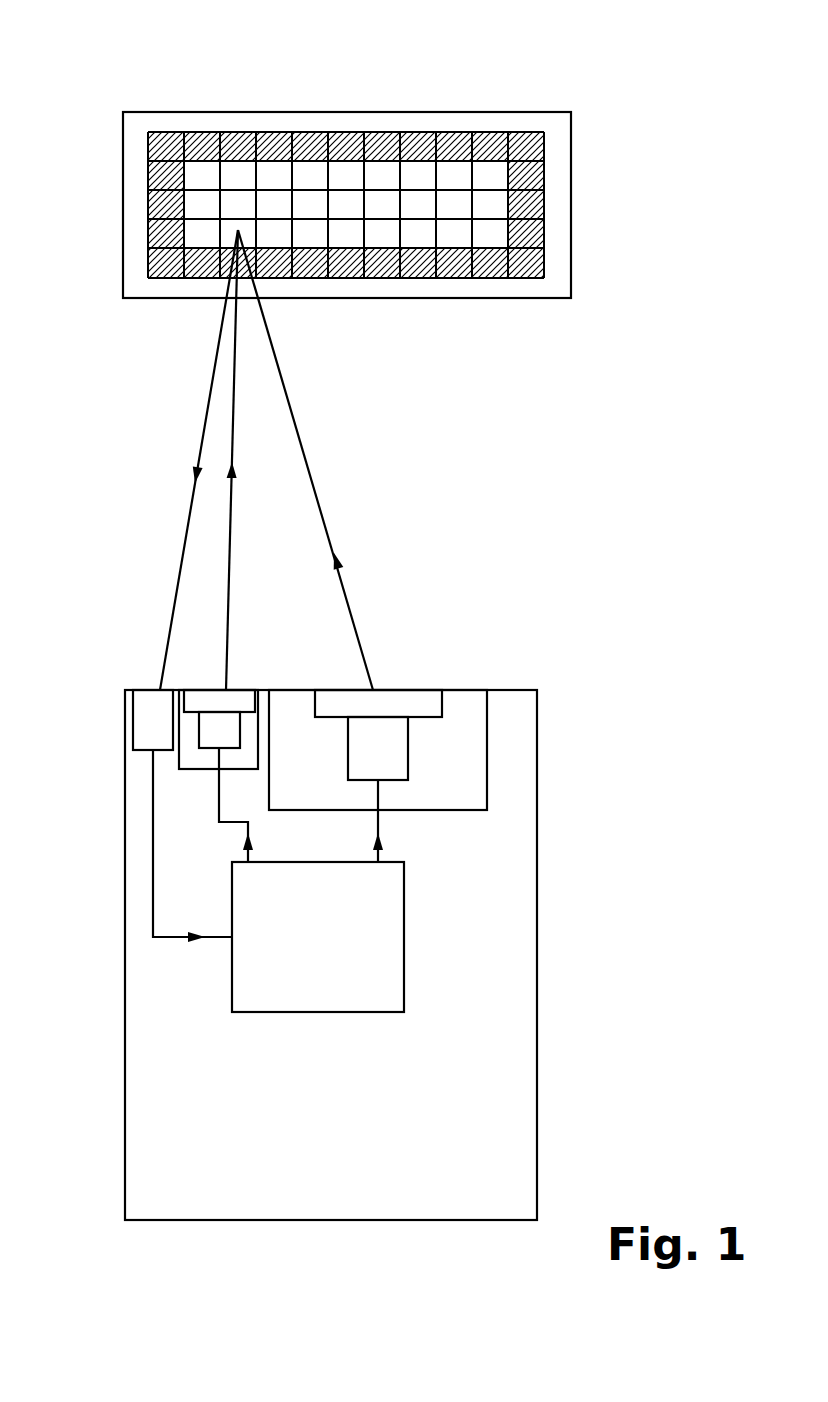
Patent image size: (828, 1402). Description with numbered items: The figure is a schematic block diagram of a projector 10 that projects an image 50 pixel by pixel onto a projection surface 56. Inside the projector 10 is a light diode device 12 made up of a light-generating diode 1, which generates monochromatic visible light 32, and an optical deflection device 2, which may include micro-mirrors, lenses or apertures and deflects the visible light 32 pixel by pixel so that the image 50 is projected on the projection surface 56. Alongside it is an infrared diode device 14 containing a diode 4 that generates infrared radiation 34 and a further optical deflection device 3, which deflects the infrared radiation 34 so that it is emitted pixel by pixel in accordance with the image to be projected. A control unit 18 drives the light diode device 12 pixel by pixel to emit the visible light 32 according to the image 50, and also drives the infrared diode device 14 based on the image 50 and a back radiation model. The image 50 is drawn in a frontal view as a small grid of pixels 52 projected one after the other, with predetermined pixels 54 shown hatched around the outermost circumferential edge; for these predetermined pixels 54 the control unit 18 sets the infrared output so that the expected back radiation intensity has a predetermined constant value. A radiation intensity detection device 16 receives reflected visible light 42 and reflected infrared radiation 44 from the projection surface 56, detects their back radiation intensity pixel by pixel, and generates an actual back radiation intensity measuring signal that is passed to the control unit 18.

The light-generating diode 1 is at (388, 770).
The optical deflection device 2 is at (405, 703).
The optical deflection device 3 is at (238, 702).
The diode 4 is at (215, 730).
The projector 10 is at (510, 1080).
The light diode device 12 is at (475, 722).
The infrared diode device 14 is at (200, 760).
The radiation intensity detection device 16 is at (153, 706).
The control unit 18 is at (382, 962).
The visible light 32 is at (322, 500).
The infrared radiation 34 is at (234, 553).
The reflected visible light 42 is at (197, 453).
The reflected infrared radiation 44 is at (183, 535).
The image 50 is at (349, 215).
The pixels 52 is at (376, 175).
The predetermined pixels 54 is at (170, 177).
The projection surface 56 is at (565, 280).